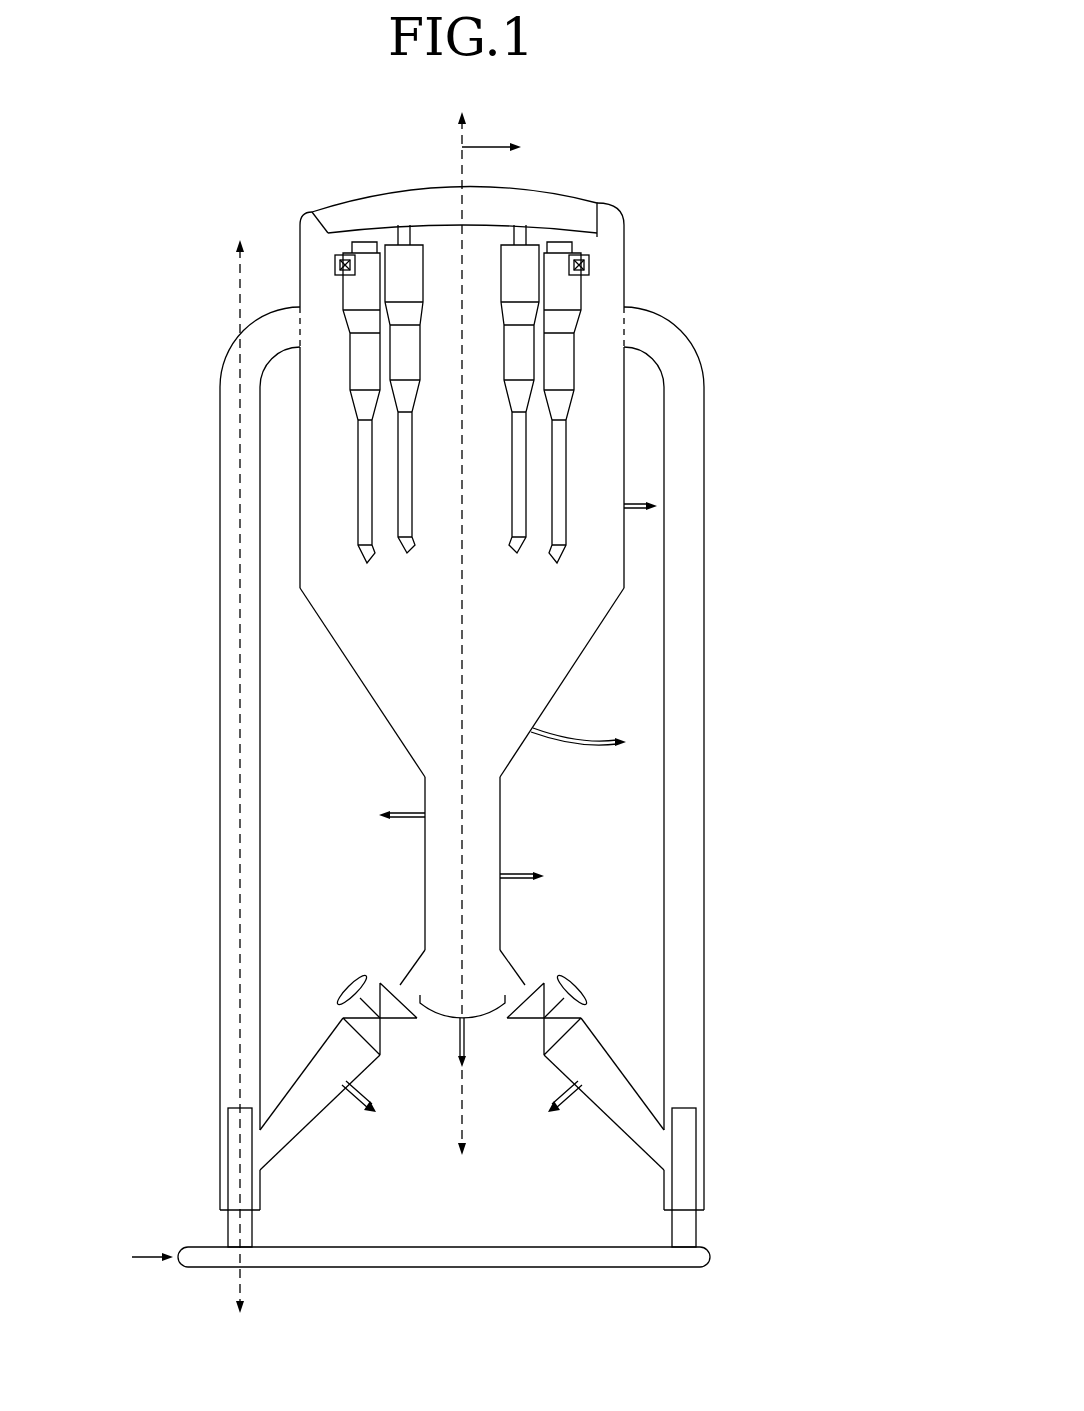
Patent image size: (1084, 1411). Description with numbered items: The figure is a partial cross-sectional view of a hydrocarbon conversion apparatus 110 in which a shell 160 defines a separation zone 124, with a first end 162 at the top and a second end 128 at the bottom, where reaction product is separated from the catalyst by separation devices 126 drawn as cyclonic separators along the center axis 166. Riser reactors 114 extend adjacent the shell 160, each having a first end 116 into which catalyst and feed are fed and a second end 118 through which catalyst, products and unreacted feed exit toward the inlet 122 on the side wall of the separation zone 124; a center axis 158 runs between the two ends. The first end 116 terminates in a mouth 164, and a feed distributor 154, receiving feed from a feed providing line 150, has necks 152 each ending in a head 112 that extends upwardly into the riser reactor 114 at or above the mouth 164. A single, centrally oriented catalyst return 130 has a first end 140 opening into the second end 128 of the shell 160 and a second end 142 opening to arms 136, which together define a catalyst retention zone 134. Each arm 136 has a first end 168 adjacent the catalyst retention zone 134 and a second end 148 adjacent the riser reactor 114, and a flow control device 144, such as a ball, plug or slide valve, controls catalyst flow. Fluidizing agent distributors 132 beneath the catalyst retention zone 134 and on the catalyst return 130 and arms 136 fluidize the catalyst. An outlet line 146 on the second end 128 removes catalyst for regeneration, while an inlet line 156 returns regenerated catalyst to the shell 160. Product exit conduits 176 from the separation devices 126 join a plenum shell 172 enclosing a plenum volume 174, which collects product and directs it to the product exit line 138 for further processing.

The hydrocarbon conversion apparatus 110 is at (684, 156).
The head 112 is at (684, 1108).
The riser reactor 114 is at (704, 770).
The first end 116 is at (704, 1045).
The second end 118 is at (704, 417).
The inlet 122 is at (626, 322).
The separation zone 124 is at (505, 464).
The separation devices 126 is at (590, 265).
The second end 128 is at (548, 712).
The catalyst return 130 is at (425, 870).
The fluidizing agent distributor 132 is at (412, 808).
The catalyst retention zone 134 is at (420, 1000).
The arms 136 is at (615, 1120).
The product exit line 138 is at (462, 168).
The first end 140 is at (500, 812).
The second end 142 is at (500, 925).
The flow control device 144 is at (530, 1030).
The outlet line 146 is at (568, 745).
The second end 148 is at (650, 1160).
The feed providing line 150 is at (150, 1262).
The neck 152 is at (696, 1190).
The feed distributor 154 is at (505, 1267).
The inlet line 156 is at (640, 506).
The center axis 158 is at (238, 1060).
The shell 160 is at (300, 277).
The first end 162 is at (624, 224).
The mouth 164 is at (700, 1152).
The center axis 166 is at (462, 723).
The first end 168 is at (540, 968).
The plenum shell 172 is at (312, 212).
The plenum volume 174 is at (440, 222).
The product exit conduit 176 is at (520, 233).